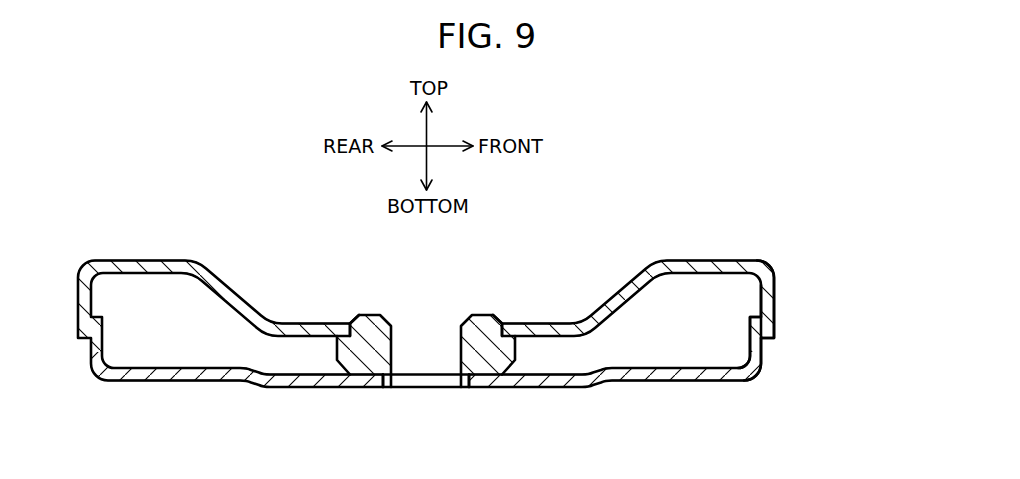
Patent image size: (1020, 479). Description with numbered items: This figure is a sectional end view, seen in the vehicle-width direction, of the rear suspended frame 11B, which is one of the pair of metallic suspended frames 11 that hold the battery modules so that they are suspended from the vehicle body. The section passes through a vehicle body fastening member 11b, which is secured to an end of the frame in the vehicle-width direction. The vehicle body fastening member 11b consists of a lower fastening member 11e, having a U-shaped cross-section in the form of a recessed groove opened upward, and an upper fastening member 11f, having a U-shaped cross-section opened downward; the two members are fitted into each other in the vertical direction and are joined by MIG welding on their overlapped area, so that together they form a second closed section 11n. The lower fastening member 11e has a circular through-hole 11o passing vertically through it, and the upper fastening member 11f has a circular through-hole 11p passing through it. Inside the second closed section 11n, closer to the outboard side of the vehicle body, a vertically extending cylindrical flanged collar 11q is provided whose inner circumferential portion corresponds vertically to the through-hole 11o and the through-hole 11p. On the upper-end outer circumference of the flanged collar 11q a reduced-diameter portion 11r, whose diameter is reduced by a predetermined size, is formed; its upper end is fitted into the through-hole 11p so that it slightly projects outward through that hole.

The suspended frame 11 is at (483, 300).
The rear suspended frame 11B is at (591, 217).
The second closed section 11n is at (213, 347).
The through-hole 11p is at (357, 327).
The reduced-diameter portion 11r is at (519, 325).
The flanged collar 11q is at (368, 352).
The through-hole 11o is at (460, 377).
The upper fastening member 11f is at (774, 302).
The lower fastening member 11e is at (765, 358).
The vehicle body fastening member 11b is at (813, 321).